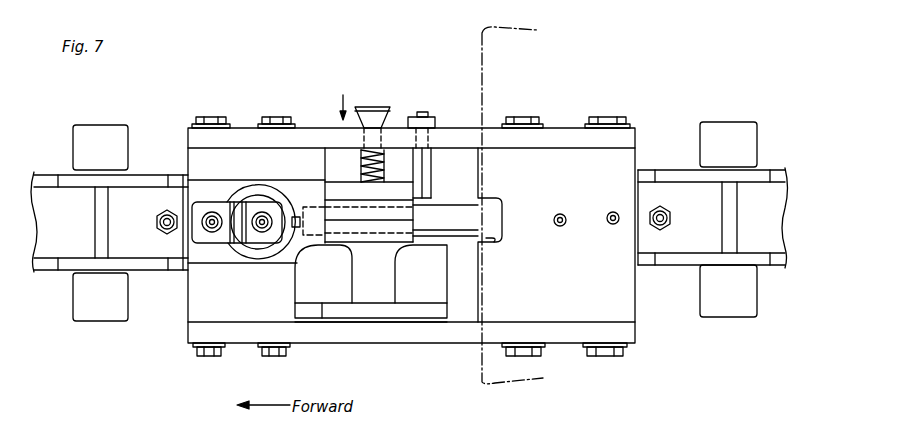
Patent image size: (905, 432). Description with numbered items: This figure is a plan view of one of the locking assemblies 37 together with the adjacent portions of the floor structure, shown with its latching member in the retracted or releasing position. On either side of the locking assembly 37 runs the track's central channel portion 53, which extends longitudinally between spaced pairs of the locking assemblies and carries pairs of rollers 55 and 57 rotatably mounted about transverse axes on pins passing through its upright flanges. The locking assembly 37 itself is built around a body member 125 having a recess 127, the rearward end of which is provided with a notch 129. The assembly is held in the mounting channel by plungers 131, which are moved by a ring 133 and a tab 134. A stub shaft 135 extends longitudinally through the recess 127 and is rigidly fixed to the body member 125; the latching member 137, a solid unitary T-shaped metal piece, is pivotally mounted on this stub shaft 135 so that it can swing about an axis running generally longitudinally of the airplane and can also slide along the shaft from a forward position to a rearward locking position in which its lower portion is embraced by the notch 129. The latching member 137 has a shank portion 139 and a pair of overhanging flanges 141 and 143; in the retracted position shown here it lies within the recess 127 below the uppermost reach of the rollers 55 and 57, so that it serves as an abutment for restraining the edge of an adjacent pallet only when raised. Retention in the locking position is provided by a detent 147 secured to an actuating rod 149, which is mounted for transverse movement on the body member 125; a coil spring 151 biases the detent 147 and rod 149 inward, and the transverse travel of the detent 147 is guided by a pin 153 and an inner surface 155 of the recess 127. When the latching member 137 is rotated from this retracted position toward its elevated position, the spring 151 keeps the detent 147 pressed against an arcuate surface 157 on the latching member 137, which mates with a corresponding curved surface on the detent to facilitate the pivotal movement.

The locking assembly 37 is at (420, 60).
The channel portion 53 is at (136, 205).
The roller 55 is at (80, 298).
The roller 57 is at (82, 145).
The body member 125 is at (648, 310).
The recess 127 is at (318, 282).
The notch 129 is at (497, 228).
The plunger 131 is at (213, 216).
The ring 133 is at (264, 214).
The tab 134 is at (211, 244).
The stub shaft 135 is at (480, 222).
The latching member 137 is at (366, 334).
The shank portion 139 is at (383, 285).
The overhanging flange 141 is at (425, 312).
The overhanging flange 143 is at (332, 313).
The detent 147 is at (343, 190).
The actuating rod 149 is at (379, 105).
The coil spring 151 is at (380, 162).
The pin 153 is at (431, 156).
The inner surface 155 is at (333, 147).
The arcuate surface 157 is at (412, 208).